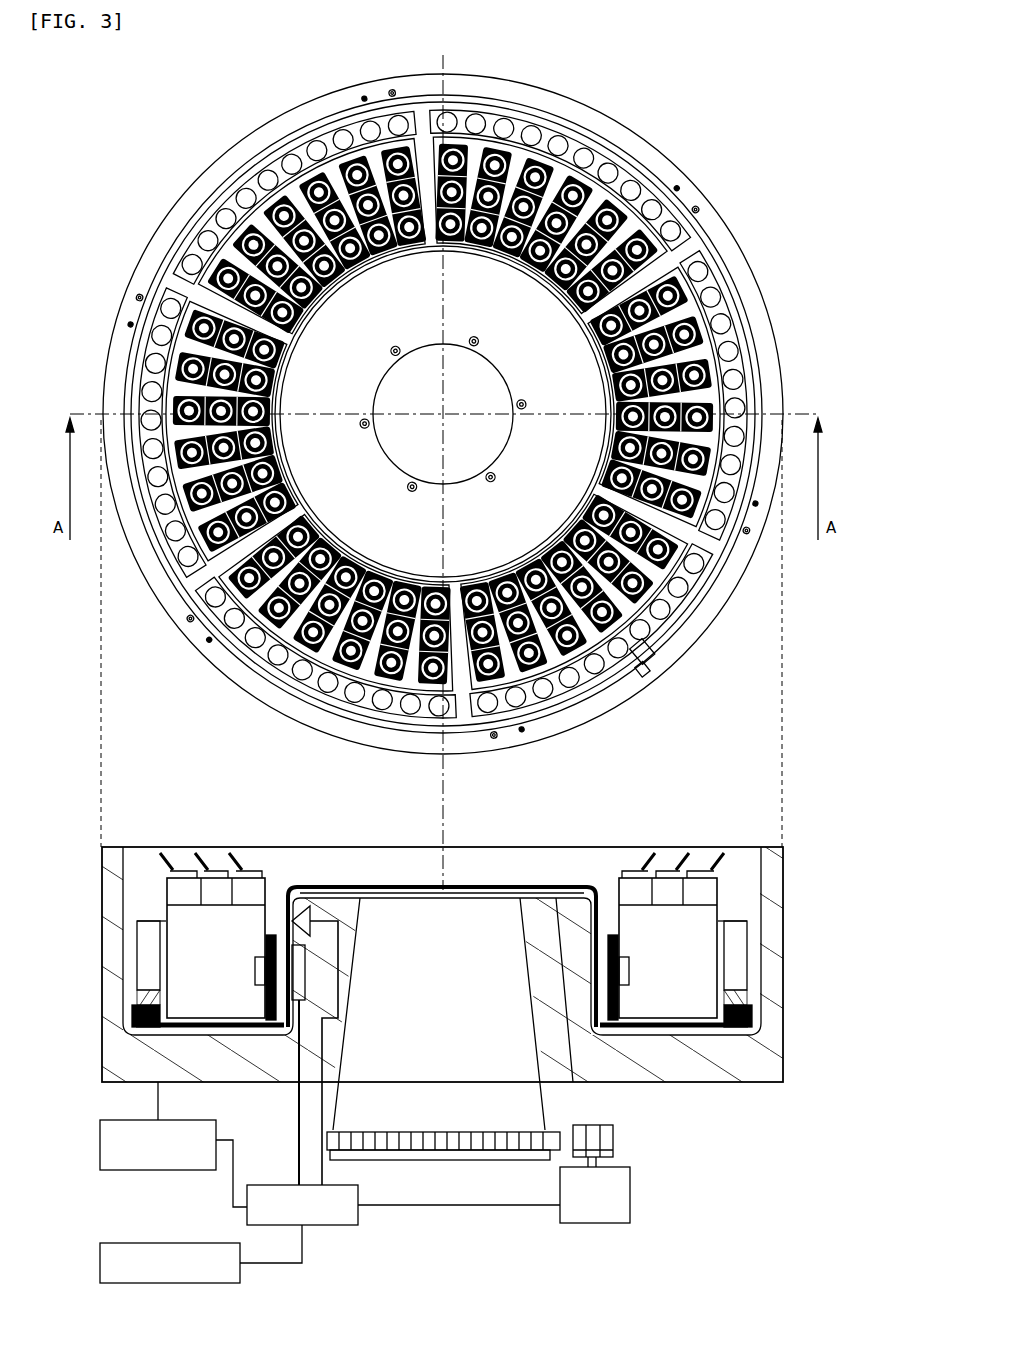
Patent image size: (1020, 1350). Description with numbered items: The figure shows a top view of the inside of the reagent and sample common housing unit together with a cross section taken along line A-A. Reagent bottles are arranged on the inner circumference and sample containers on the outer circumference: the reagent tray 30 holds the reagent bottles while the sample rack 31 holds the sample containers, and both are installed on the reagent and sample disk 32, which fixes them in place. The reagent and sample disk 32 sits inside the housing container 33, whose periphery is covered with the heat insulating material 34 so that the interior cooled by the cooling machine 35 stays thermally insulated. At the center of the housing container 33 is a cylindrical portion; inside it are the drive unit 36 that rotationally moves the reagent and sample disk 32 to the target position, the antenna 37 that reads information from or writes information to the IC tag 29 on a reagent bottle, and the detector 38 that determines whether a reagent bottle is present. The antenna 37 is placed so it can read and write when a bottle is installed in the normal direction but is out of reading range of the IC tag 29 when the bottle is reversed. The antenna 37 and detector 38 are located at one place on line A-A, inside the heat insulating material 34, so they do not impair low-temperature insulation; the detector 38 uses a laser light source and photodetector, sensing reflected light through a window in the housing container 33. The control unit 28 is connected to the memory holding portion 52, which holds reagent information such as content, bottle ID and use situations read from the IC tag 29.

The control unit 28 is at (330, 1225).
The IC tag 29 is at (257, 970).
The reagent tray 30 is at (443, 414).
The sample rack 31 is at (469, 414).
The reagent and sample disk 32 is at (573, 878).
The housing container 33 is at (493, 855).
The heat insulating material 34 is at (772, 980).
The cooling machine 35 is at (100, 1140).
The drive unit 36 is at (523, 1105).
The antenna 37 is at (290, 1005).
The detector 38 is at (308, 910).
The memory holding portion 52 is at (100, 1258).